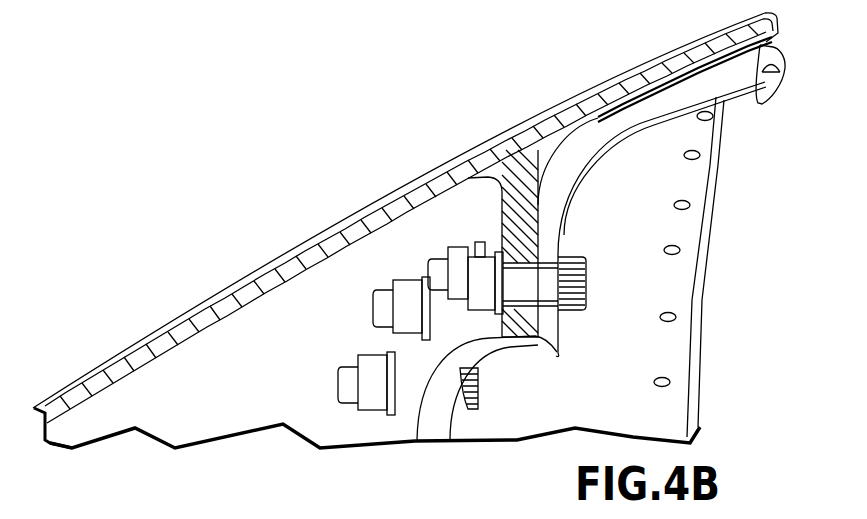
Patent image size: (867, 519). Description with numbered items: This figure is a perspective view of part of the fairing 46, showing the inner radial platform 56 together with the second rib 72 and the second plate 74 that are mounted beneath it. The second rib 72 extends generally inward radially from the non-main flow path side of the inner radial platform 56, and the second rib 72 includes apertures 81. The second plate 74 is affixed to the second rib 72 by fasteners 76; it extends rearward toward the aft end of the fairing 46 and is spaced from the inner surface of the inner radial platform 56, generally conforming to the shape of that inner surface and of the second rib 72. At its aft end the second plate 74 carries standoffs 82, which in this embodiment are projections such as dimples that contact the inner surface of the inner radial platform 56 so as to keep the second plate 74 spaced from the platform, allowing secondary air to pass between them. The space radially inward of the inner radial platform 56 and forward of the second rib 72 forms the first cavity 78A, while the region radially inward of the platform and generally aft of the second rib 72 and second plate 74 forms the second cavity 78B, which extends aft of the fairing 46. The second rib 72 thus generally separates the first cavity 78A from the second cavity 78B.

The fairing 46 is at (405, 230).
The inner radial platform 56 is at (275, 257).
The second rib 72 is at (518, 339).
The second plate 74 is at (603, 120).
The fasteners 76 is at (591, 278).
The first cavity 78A is at (312, 347).
The second cavity 78B is at (630, 340).
The apertures 81 is at (521, 181).
The standoffs 82 is at (713, 116).